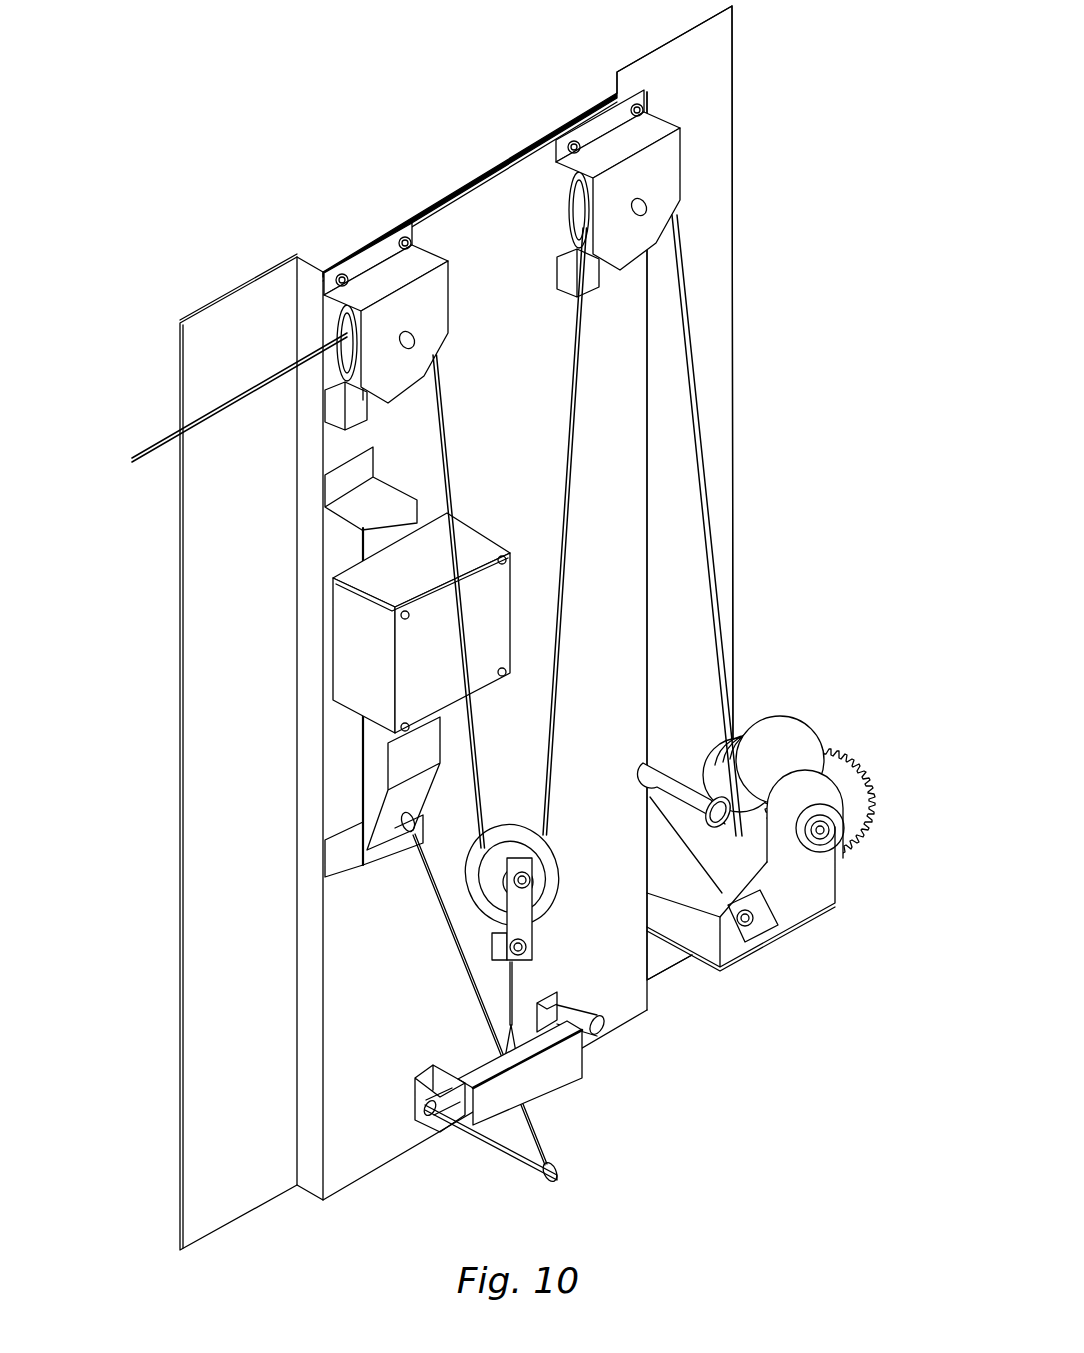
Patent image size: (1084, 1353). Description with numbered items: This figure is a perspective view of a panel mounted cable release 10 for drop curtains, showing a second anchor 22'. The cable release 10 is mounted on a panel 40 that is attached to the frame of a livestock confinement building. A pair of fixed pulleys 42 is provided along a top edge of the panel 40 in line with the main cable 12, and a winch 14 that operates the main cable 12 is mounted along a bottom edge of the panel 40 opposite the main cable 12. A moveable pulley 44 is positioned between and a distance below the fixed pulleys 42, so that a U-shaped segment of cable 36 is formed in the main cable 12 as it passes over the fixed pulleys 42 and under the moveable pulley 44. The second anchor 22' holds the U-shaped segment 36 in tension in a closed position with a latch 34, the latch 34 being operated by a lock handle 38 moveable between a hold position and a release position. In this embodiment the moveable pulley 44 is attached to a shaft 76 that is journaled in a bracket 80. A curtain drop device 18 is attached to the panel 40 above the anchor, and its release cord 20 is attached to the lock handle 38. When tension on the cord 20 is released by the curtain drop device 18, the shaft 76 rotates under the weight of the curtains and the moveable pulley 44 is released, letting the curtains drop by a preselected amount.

The cable release 10 is at (607, 607).
The main cable 12 is at (157, 440).
The winch 14 is at (850, 800).
The curtain drop device 18 is at (335, 690).
The release cord 20 is at (447, 930).
The second anchor 22' is at (561, 896).
The latch 34 is at (547, 973).
The U-shaped segment of cable 36 is at (565, 430).
The lock handle 38 is at (508, 1160).
The panel 40 is at (723, 222).
The fixed pulleys 42 is at (682, 163).
The moveable pulley 44 is at (547, 837).
The shaft 76 is at (573, 1013).
The bracket 80 is at (553, 1103).